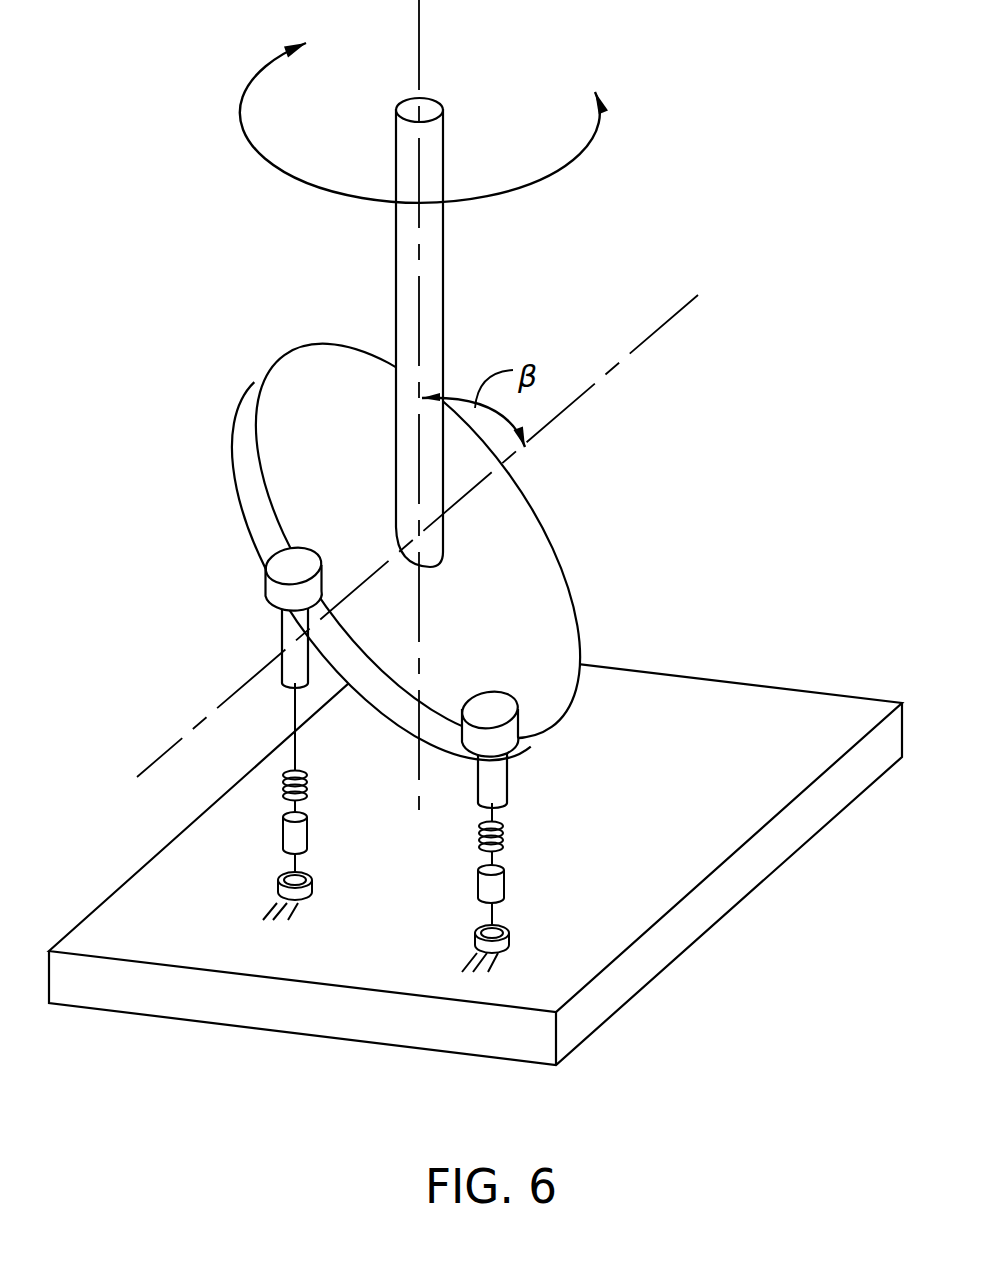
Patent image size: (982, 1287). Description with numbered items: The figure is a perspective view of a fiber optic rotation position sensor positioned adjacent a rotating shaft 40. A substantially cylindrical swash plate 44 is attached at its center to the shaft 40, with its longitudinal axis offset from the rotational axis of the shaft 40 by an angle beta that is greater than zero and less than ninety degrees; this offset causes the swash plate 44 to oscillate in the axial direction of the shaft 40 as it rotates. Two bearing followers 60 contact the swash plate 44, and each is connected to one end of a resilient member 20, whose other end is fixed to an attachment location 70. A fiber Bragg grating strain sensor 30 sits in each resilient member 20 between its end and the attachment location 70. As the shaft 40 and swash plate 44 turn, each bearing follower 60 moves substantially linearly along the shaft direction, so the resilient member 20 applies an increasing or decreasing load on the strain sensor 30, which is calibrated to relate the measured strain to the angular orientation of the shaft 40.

The resilient member 20 is at (283, 773).
The fiber Bragg grating 30 is at (283, 833).
The shaft 40 is at (435, 240).
The swash plate 44 is at (523, 517).
The bearing follower 60 is at (290, 575).
The attachment location 70 is at (277, 890).